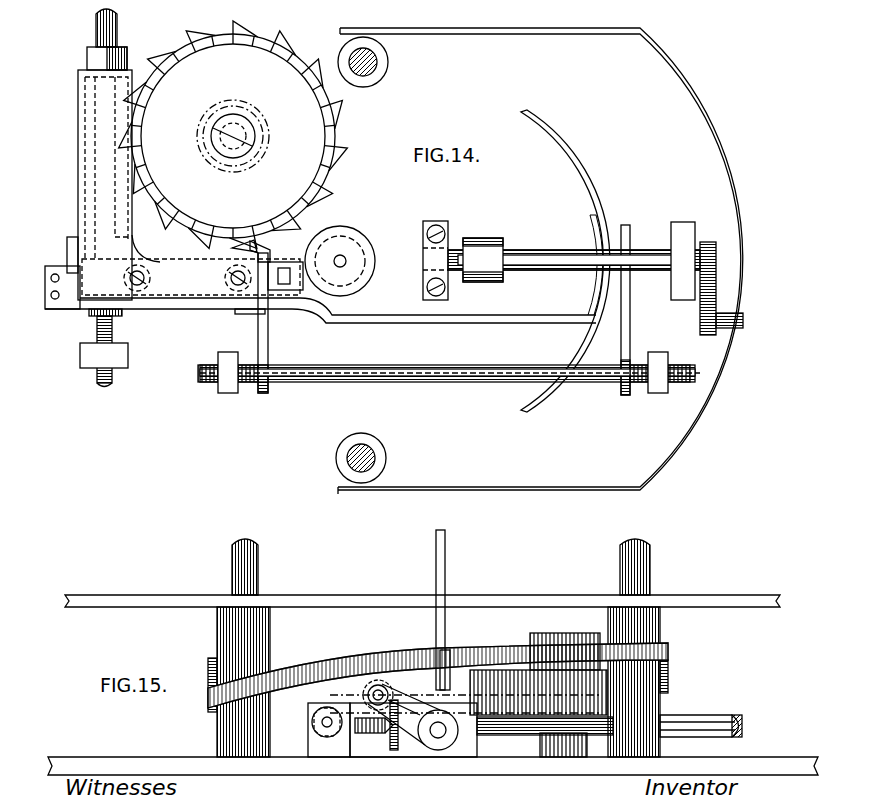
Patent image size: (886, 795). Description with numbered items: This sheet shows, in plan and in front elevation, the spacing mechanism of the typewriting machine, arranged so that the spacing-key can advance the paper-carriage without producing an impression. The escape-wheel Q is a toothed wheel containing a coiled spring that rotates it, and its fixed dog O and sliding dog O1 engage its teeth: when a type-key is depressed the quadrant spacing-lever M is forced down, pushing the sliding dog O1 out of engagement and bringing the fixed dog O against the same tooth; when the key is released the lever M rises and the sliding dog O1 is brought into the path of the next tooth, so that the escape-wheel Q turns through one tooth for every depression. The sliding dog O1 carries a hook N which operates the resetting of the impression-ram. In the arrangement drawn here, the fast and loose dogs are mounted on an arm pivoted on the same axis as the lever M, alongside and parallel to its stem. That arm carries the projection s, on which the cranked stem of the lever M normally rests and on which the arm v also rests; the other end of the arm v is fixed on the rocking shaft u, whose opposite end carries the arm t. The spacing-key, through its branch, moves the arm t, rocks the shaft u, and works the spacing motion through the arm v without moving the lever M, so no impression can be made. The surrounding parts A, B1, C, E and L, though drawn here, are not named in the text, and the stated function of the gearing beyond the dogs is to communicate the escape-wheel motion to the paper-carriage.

In FIG. 14, the curved frame / rack A is at (563, 30).
In FIG. 15, the curved frame / rack A is at (401, 656).
In FIG. 15, the plates B1 is at (591, 597).
In FIG. 14, the adjusting gear C is at (712, 300).
In FIG. 15, the adjusting gear C is at (368, 694).
In FIG. 14, the wheel E is at (373, 255).
In FIG. 15, the rod L is at (446, 573).
In FIG. 14, the quadrant spacing-lever M is at (436, 316).
In FIG. 14, the hook N is at (67, 250).
In FIG. 14, the fixed dog O is at (248, 258).
In FIG. 14, the sliding dog O1 is at (272, 260).
In FIG. 14, the escape-wheel Q is at (233, 137).
In FIG. 15, the escape-wheel Q is at (520, 680).
In FIG. 14, the projection s is at (240, 314).
In FIG. 14, the arm t is at (630, 313).
In FIG. 15, the arm t is at (447, 690).
In FIG. 14, the rocking shaft u is at (452, 382).
In FIG. 15, the rocking shaft u is at (312, 718).
In FIG. 14, the arm v is at (268, 331).